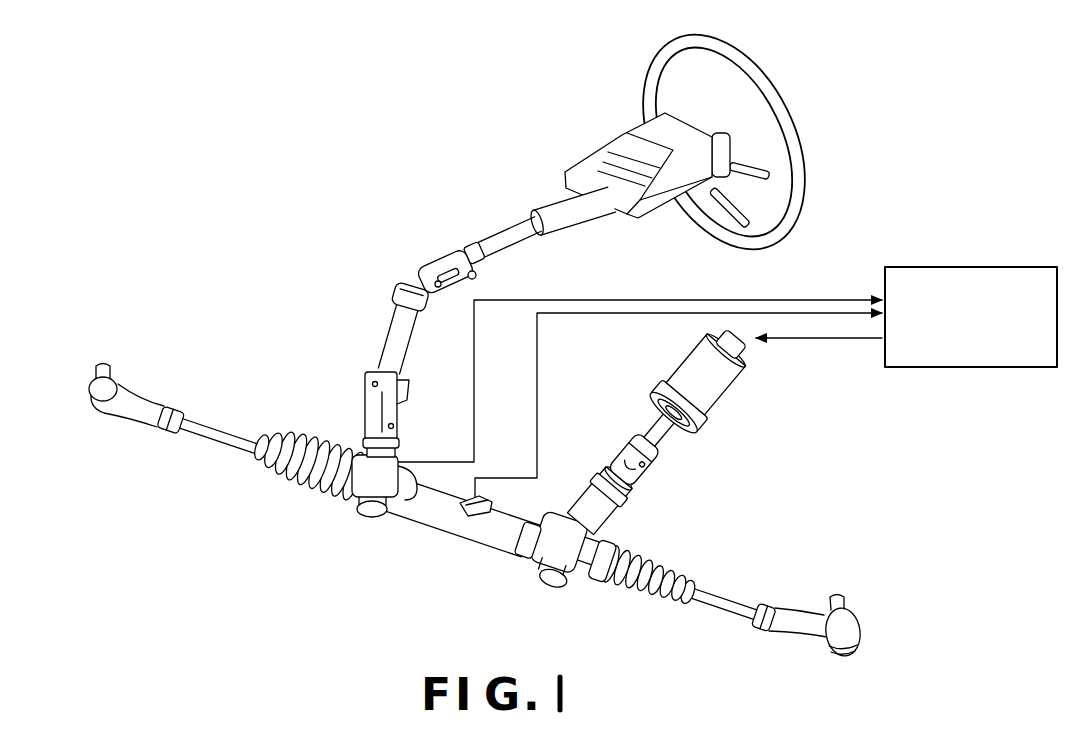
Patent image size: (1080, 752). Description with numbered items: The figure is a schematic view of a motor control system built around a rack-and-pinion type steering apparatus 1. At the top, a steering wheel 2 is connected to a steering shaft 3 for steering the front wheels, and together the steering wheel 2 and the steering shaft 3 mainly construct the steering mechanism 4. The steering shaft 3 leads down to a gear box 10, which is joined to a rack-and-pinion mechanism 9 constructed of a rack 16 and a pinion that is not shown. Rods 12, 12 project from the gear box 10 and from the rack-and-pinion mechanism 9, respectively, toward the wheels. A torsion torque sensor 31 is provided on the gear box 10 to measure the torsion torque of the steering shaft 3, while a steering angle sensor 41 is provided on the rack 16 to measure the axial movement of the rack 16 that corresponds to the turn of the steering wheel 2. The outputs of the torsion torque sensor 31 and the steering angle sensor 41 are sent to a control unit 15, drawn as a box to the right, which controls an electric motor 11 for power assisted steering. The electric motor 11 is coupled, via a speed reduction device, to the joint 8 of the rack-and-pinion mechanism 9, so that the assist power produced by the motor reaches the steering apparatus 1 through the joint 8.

The steering apparatus 1 is at (573, 334).
The steering wheel 2 is at (773, 77).
The steering shaft 3 is at (507, 223).
The steering mechanism 4 is at (430, 247).
The torsion torque sensor 31 is at (362, 476).
The gear box 10 is at (351, 502).
The rack 16 is at (442, 520).
The rack-and-pinion mechanism 9 is at (526, 570).
The rods 12 is at (210, 432).
The steering angle sensor 41 is at (520, 493).
The joint 8 is at (655, 482).
The electric motor 11 is at (727, 388).
The control unit 15 is at (977, 368).